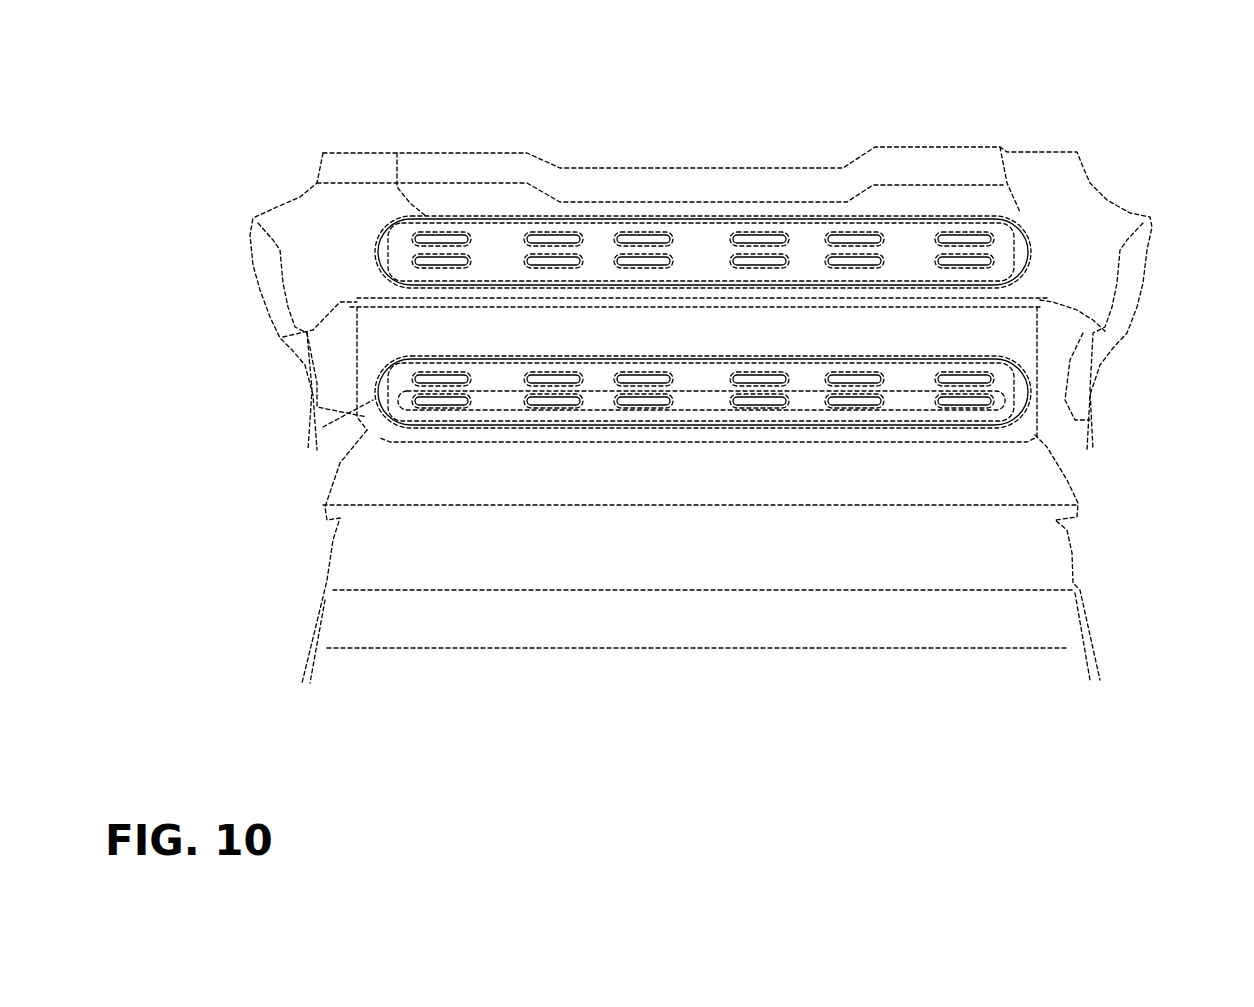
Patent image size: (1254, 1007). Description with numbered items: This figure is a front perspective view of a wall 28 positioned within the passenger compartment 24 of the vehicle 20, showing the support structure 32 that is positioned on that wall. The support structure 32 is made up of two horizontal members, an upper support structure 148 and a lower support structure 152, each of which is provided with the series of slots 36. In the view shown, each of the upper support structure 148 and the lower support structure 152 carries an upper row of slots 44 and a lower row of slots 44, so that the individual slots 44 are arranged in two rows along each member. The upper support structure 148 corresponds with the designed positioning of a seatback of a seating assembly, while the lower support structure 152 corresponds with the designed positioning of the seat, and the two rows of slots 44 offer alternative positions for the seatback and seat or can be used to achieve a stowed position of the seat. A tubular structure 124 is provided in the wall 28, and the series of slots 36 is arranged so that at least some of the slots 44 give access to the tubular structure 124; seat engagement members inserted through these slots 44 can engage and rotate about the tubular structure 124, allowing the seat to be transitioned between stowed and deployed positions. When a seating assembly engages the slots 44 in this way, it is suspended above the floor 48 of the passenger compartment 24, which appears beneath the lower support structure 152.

The vehicle 20 is at (247, 143).
The passenger compartment 24 is at (1013, 550).
The wall 28 is at (1043, 224).
The support structure 32 is at (375, 262).
The series of slots 36 is at (1027, 392).
The slot 44 is at (567, 232).
The floor 48 is at (692, 566).
The tubular structure 124 is at (383, 410).
The upper support structure 148 is at (385, 222).
The lower support structure 152 is at (390, 432).